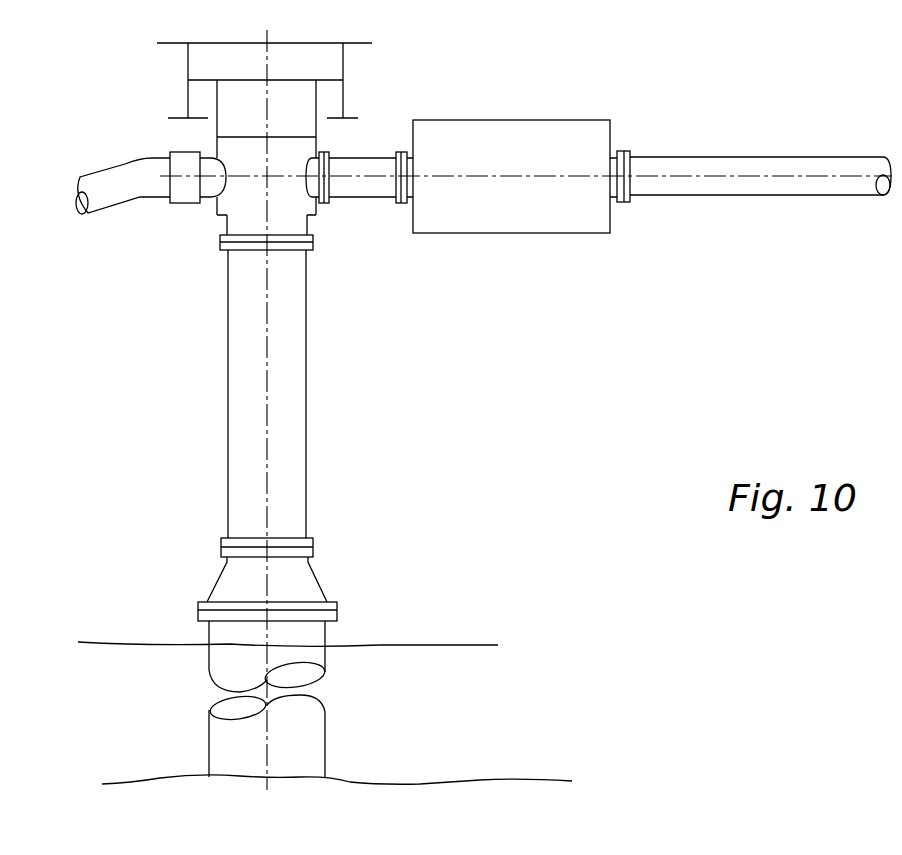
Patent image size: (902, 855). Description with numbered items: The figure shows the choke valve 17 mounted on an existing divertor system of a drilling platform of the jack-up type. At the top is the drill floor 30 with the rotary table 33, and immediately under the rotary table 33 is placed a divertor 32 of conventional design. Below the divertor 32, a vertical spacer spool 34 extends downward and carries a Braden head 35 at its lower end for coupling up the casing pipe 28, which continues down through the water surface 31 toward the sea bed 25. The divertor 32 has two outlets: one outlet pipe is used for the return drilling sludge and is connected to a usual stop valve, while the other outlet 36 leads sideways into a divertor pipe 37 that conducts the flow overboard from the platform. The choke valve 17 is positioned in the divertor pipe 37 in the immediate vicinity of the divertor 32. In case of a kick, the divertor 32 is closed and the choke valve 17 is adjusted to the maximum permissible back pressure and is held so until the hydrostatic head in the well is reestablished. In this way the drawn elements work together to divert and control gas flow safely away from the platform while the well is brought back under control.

The choke valve 17 is at (512, 142).
The sea bed 25 is at (432, 785).
The casing pipe 28 is at (386, 723).
The drill floor 30 is at (361, 44).
The water surface 31 is at (437, 643).
The divertor 32 is at (225, 207).
The rotary table 33 is at (213, 44).
The spacer spool 34 is at (290, 403).
The Braden head 35 is at (303, 588).
The outlet 36 is at (372, 187).
The divertor pipe 37 is at (748, 187).